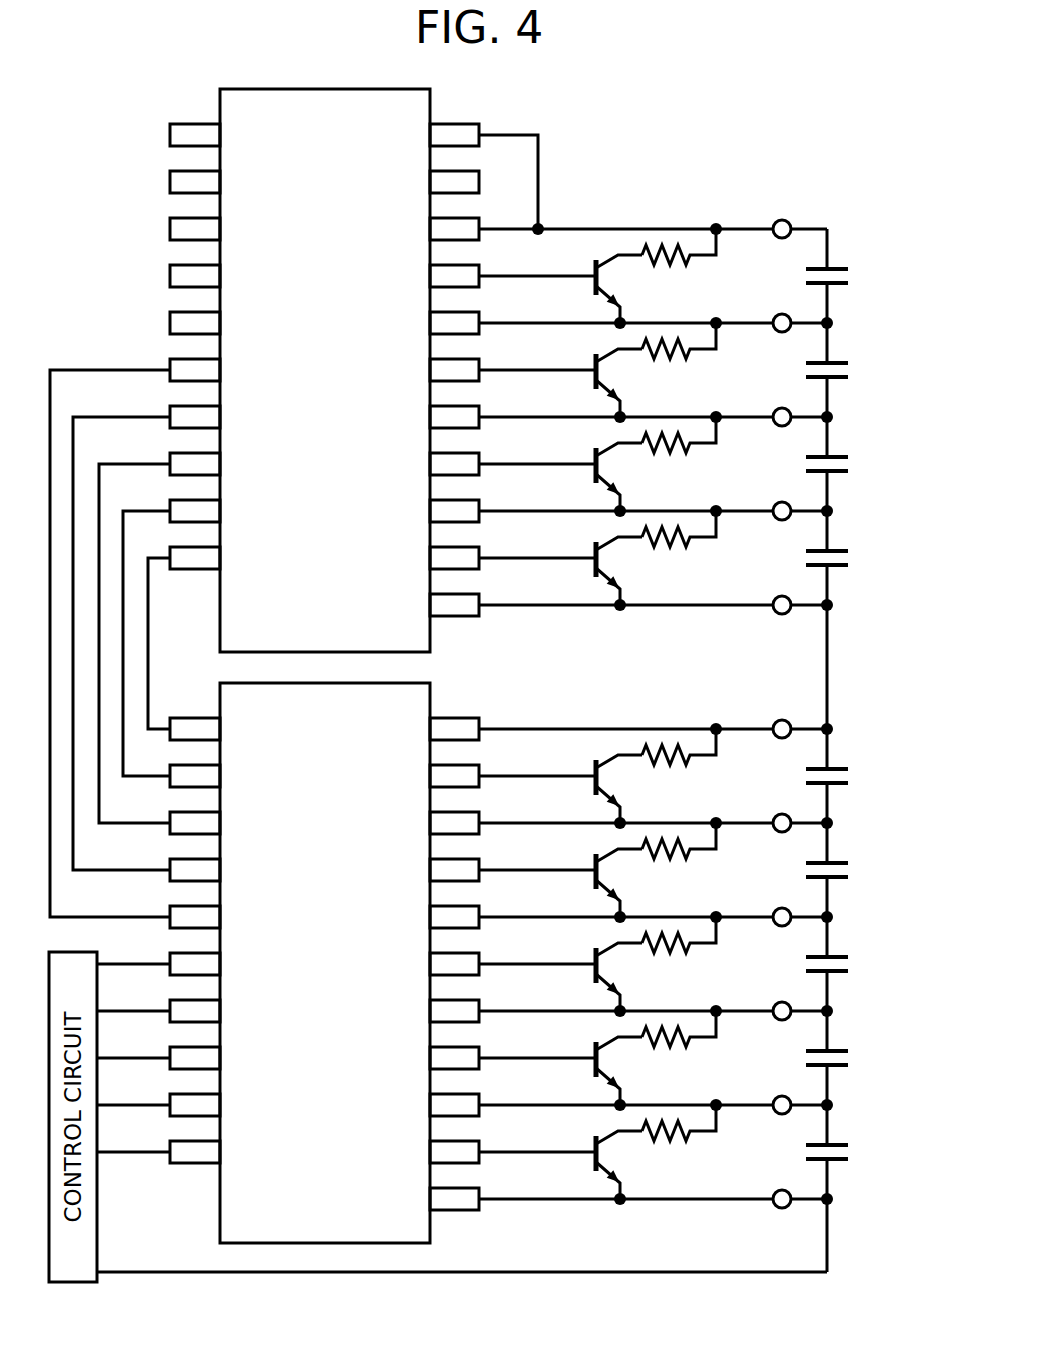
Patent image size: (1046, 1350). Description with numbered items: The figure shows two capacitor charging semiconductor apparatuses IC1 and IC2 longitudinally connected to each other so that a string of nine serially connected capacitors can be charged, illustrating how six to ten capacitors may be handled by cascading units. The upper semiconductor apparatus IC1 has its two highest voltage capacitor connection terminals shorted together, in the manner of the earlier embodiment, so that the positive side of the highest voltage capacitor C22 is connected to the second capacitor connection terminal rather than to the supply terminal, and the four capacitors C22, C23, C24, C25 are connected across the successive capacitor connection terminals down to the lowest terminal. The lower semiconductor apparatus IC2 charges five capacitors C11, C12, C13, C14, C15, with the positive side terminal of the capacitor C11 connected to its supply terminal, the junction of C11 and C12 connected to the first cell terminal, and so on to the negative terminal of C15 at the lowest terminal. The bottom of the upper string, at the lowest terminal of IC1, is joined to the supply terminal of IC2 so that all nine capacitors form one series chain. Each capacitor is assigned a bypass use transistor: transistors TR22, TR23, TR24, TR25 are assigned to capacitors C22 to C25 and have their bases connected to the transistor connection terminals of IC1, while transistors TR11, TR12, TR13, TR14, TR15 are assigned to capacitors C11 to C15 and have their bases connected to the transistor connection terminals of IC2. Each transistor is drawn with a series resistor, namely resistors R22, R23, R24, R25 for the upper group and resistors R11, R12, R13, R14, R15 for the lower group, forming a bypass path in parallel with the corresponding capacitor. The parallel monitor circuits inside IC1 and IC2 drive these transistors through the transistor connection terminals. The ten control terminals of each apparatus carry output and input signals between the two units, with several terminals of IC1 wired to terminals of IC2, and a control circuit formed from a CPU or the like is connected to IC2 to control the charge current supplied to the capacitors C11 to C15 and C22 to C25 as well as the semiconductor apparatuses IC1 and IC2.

The semiconductor apparatus IC1 is at (324, 370).
The semiconductor apparatus IC2 is at (324, 963).
The bypass use transistor TR22 is at (560, 286).
The bypass use transistor TR23 is at (560, 380).
The bypass use transistor TR24 is at (560, 474).
The bypass use transistor TR25 is at (560, 568).
The bypass use transistor TR11 is at (560, 786).
The bypass use transistor TR12 is at (560, 880).
The bypass use transistor TR13 is at (560, 974).
The bypass use transistor TR14 is at (560, 1068).
The bypass use transistor TR15 is at (560, 1162).
The resistor R22 is at (679, 262).
The resistor R23 is at (679, 356).
The resistor R24 is at (679, 450).
The resistor R25 is at (679, 544).
The resistor R11 is at (679, 762).
The resistor R12 is at (679, 856).
The resistor R13 is at (679, 950).
The resistor R14 is at (679, 1044).
The resistor R15 is at (679, 1138).
The capacitor C22 is at (850, 268).
The capacitor C23 is at (853, 374).
The capacitor C24 is at (853, 468).
The capacitor C25 is at (853, 562).
The capacitor C11 is at (850, 768).
The capacitor C12 is at (853, 874).
The capacitor C13 is at (853, 968).
The capacitor C14 is at (853, 1062).
The capacitor C15 is at (853, 1156).